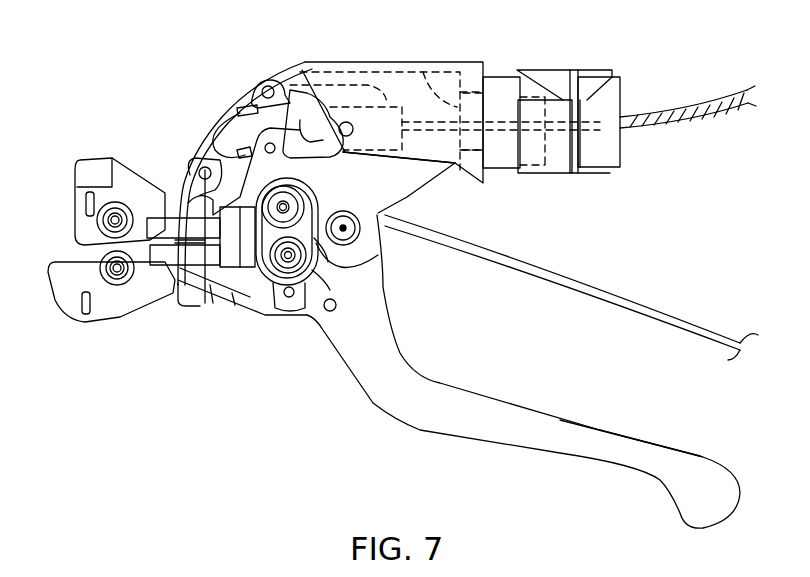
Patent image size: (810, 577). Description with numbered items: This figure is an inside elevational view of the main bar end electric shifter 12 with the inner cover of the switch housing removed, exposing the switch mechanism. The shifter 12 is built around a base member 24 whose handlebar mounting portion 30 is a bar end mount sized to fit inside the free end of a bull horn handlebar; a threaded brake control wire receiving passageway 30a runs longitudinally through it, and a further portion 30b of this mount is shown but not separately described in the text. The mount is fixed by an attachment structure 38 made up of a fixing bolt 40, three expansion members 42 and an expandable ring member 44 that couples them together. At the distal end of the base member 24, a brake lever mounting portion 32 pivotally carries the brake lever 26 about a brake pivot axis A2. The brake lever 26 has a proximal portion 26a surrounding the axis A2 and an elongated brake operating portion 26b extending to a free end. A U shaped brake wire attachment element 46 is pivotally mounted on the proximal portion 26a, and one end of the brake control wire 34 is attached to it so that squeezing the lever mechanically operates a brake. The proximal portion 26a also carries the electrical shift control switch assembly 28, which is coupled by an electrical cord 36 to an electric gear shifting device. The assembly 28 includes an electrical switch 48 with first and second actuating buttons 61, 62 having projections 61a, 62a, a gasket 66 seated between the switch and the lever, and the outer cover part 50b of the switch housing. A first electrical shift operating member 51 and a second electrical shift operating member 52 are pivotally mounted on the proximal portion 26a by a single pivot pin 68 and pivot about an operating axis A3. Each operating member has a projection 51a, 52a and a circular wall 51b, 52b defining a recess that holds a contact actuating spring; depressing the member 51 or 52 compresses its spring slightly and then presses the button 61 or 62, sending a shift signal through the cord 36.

The main bar end electric shifter 12 is at (185, 65).
The base member 24 is at (345, 55).
The brake lever 26 is at (420, 438).
The proximal portion 26a is at (200, 147).
The elongated brake operating portion 26b is at (603, 430).
The electrical shift control switch assembly 28 is at (245, 292).
The handlebar mounting portion 30 is at (500, 157).
The brake control wire receiving passageway 30a is at (420, 63).
The adjusting member outer portion 30b is at (527, 87).
The brake lever mounting portion 32 is at (407, 197).
The brake control wire 34 is at (720, 98).
The electrical cord 36 is at (615, 288).
The attachment structure 38 is at (608, 190).
The fixing bolt 40 is at (610, 90).
The expansion members 42 is at (593, 70).
The expandable ring member 44 is at (582, 150).
The brake wire attachment element 46 is at (308, 142).
The electrical switch 48 is at (322, 280).
The outer cover part 50b is at (252, 83).
The first electrical shift operating member 51 is at (92, 150).
The projection 51a is at (110, 219).
The circular wall 51b is at (103, 230).
The second electrical shift operating member 52 is at (55, 307).
The projection 52a is at (122, 272).
The circular wall 52b is at (112, 283).
The first actuating button 61 is at (304, 190).
The projection 61a is at (287, 207).
The second actuating button 62 is at (283, 265).
The projection 62a is at (293, 268).
The gasket 66 is at (314, 258).
The pivot pin 68 is at (213, 313).
The brake pivot axis A2 is at (345, 230).
The operating axis A3 is at (180, 210).